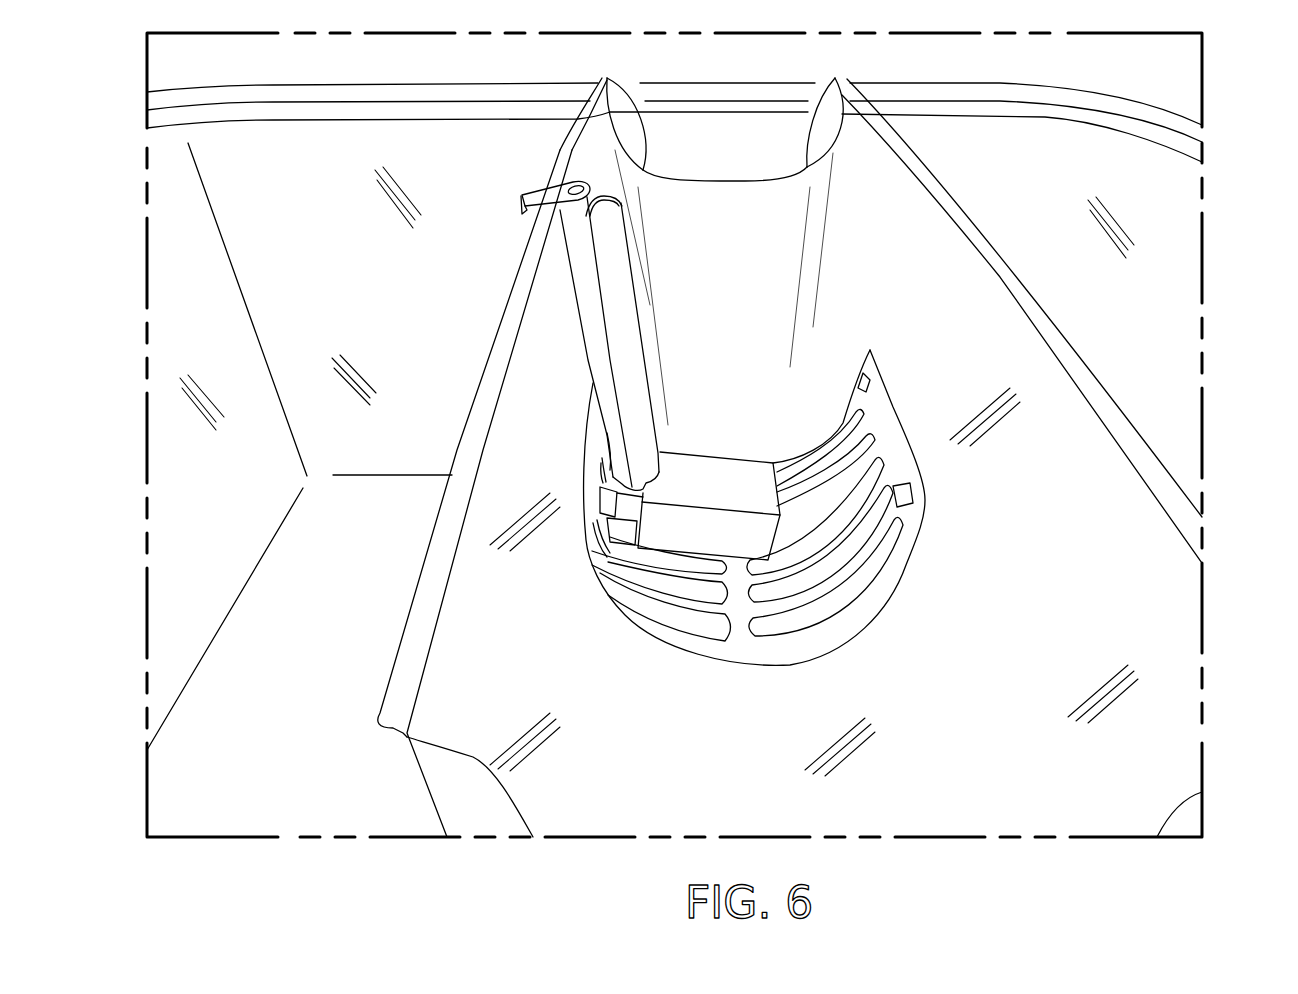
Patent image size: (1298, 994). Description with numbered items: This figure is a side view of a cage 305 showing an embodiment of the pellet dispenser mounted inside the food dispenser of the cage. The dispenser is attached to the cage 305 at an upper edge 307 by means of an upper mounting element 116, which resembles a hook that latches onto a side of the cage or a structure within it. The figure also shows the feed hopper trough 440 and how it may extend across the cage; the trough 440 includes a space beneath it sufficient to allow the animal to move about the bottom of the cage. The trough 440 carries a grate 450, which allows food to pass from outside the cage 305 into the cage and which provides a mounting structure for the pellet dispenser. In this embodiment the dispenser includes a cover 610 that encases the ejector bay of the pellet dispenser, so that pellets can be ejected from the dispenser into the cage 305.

The cage 305 is at (1222, 114).
The upper edge 307 is at (562, 161).
The upper mounting element 116 is at (525, 193).
The feed hopper trough 440 is at (486, 336).
The cover 610 is at (643, 318).
The grate 450 is at (842, 437).